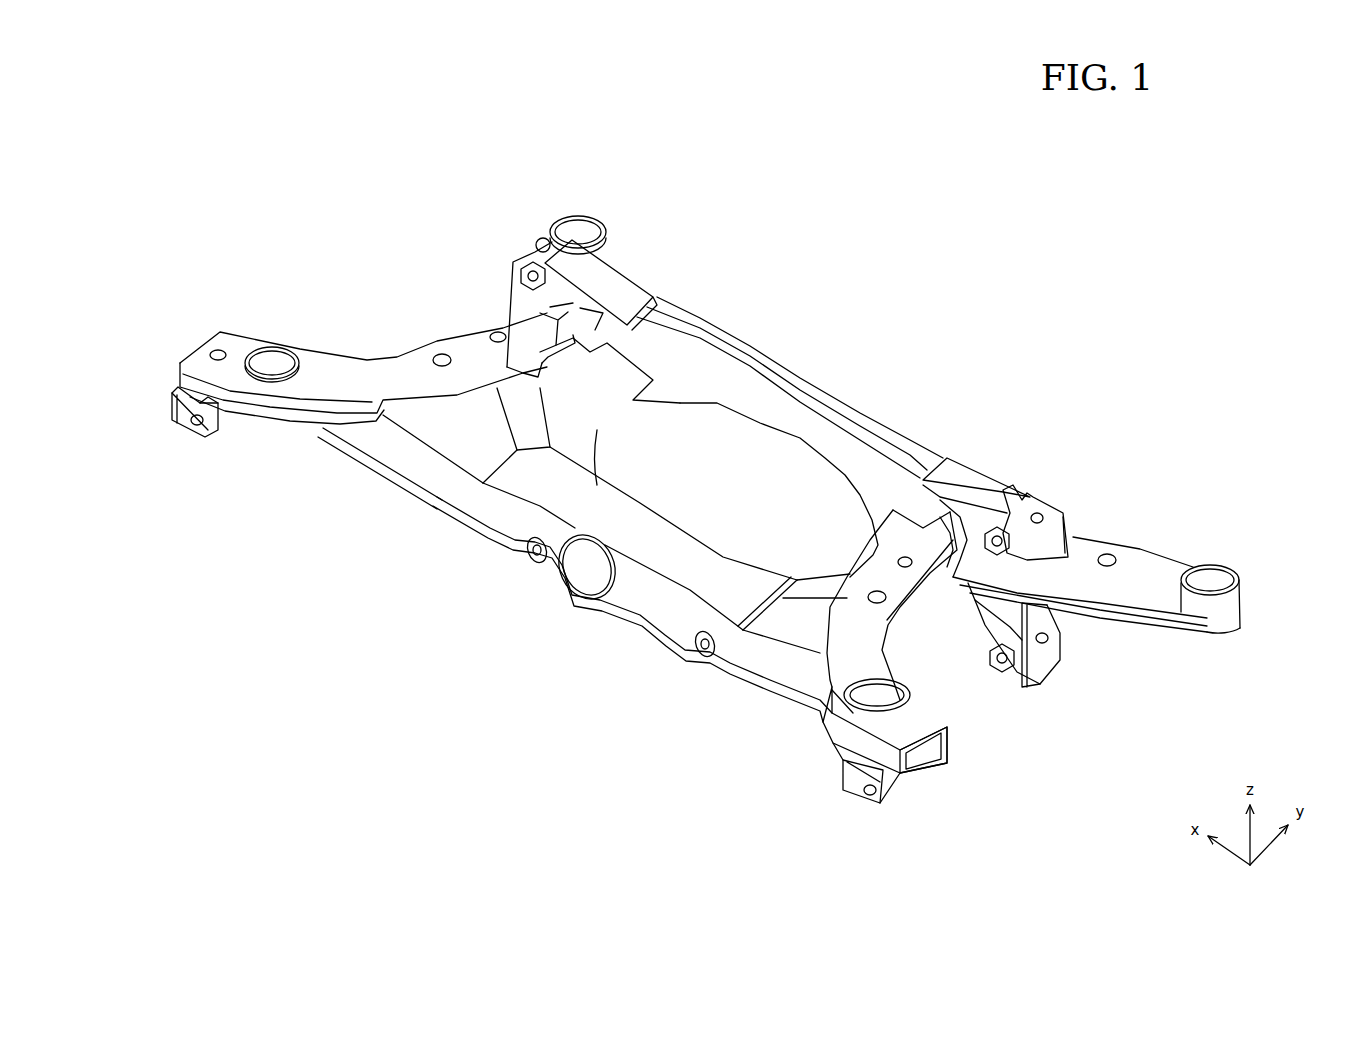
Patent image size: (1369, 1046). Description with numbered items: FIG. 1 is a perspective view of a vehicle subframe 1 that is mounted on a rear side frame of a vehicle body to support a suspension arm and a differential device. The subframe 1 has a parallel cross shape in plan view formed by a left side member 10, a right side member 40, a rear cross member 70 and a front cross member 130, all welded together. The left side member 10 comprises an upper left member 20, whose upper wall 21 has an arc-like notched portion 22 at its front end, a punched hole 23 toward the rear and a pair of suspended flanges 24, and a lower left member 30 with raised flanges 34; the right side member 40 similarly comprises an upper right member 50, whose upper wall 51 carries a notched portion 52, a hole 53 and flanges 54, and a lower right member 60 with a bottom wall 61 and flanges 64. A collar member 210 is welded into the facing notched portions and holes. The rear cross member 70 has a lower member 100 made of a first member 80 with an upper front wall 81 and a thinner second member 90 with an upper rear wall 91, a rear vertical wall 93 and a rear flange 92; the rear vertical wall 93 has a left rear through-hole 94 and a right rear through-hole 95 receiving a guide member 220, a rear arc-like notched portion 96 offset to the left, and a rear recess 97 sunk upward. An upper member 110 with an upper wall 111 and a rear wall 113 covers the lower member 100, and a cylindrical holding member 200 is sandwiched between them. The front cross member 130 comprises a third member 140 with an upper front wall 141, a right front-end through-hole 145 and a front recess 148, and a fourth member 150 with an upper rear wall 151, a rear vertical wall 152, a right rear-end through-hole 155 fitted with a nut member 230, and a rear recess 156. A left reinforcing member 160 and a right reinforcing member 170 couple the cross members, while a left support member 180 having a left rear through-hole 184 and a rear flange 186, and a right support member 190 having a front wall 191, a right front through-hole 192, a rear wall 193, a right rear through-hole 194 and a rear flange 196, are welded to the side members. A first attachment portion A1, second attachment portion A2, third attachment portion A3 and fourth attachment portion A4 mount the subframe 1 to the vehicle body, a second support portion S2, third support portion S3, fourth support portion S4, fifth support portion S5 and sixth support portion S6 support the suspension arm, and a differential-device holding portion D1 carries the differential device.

The subframe 1 is at (1032, 352).
The left side member 10 is at (428, 280).
The upper left member 20 is at (415, 327).
The upper wall 21 is at (397, 367).
The notched portion 22 is at (600, 228).
The hole 23 is at (283, 365).
The flanges 24 is at (320, 416).
The lower left member 30 is at (268, 468).
The flanges 34 is at (253, 413).
The right side member 40 is at (1163, 505).
The upper right member 50 is at (1120, 520).
The upper wall 51 is at (876, 642).
The notched portion 52 is at (1195, 577).
The hole 53 is at (835, 750).
The flanges 54 is at (900, 628).
The lower right member 60 is at (1198, 652).
The bottom wall 61 is at (1175, 636).
The flanges 64 is at (1140, 616).
The rear cross member 70 is at (450, 630).
The first member 80 is at (556, 415).
The upper front wall 81 is at (808, 583).
The second member 90 is at (472, 410).
The upper rear wall 91 is at (410, 440).
The rear flange 92 is at (360, 452).
The rear vertical wall 93 is at (437, 508).
The left rear through-hole 94 is at (528, 556).
The right rear through-hole 95 is at (704, 676).
The rear arc-like notched portion 96 is at (592, 600).
The rear recess 97 is at (650, 622).
The lower member 100 is at (578, 656).
The upper member 110 is at (702, 530).
The upper wall 111 is at (724, 572).
The rear wall 113 is at (652, 592).
The front cross member 130 is at (892, 382).
The third member 140 is at (808, 365).
The upper front wall 141 is at (745, 342).
The right front-end through-hole 145 is at (1052, 643).
The front recess 148 is at (845, 465).
The fourth member 150 is at (812, 460).
The upper rear wall 151 is at (712, 330).
The rear vertical wall 152 is at (805, 428).
The right rear-end through-hole 155 is at (995, 680).
The rear recess 156 is at (760, 420).
The left reinforcing member 160 is at (598, 445).
The right reinforcing member 170 is at (865, 575).
The left support member 180 is at (655, 255).
The left rear through-hole 184 is at (512, 285).
The rear flange 186 is at (555, 326).
The right support member 190 is at (990, 460).
The front wall 191 is at (1075, 518).
The right front through-hole 192 is at (1048, 530).
The rear wall 193 is at (920, 482).
The right rear through-hole 194 is at (972, 483).
The rear flange 196 is at (950, 570).
The holding member 200 is at (620, 552).
The collar member 210 is at (265, 345).
The guide member 220 is at (538, 568).
The nut member 230 is at (517, 268).
The first attachment portion A1 is at (536, 202).
The second attachment portion A2 is at (278, 277).
The third attachment portion A3 is at (1236, 555).
The fourth attachment portion A4 is at (965, 751).
The differential-device holding portion D1 is at (553, 628).
The second support portion S2 is at (1110, 716).
The third support portion S3 is at (512, 598).
The fourth support portion S4 is at (698, 700).
The fifth support portion S5 is at (513, 243).
The sixth support portion S6 is at (1050, 472).